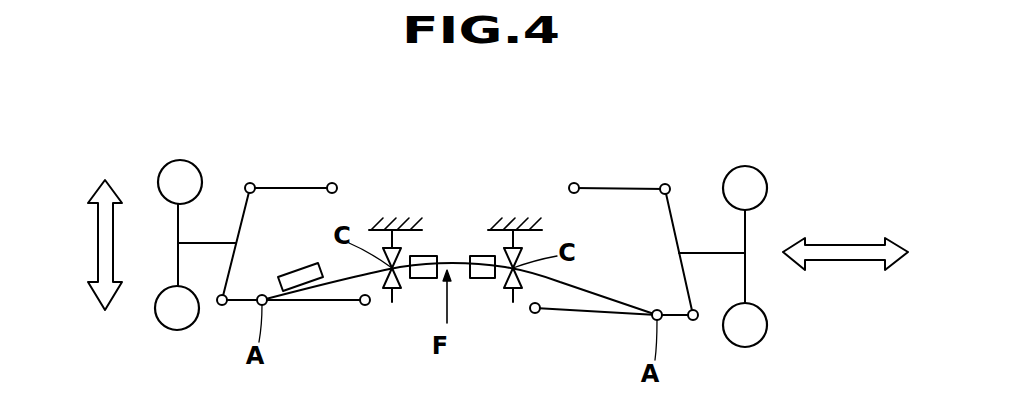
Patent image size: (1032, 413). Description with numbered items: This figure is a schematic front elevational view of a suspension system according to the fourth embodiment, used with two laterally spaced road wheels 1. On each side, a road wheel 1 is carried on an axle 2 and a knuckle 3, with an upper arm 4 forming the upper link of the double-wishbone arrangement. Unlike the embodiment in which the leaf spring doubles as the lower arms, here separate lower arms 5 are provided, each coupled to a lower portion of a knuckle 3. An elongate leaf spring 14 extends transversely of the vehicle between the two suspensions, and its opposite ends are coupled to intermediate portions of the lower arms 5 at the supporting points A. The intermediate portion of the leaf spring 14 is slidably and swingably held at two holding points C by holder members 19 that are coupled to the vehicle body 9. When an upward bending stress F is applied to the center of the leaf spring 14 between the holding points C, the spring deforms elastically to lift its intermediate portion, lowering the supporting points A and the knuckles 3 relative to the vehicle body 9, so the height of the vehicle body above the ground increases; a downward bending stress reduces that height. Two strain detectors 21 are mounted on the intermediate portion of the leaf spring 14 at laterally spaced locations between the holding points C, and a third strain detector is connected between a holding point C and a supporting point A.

The road wheel 1 is at (164, 166).
The axle 2 is at (210, 243).
The knuckle 3 is at (242, 222).
The upper arm 4 is at (298, 187).
The lower arm 5 is at (308, 302).
The vehicle body 9 is at (392, 216).
The leaf spring 14 is at (600, 290).
The holder member 19 is at (392, 302).
The strain detector 21 is at (425, 256).